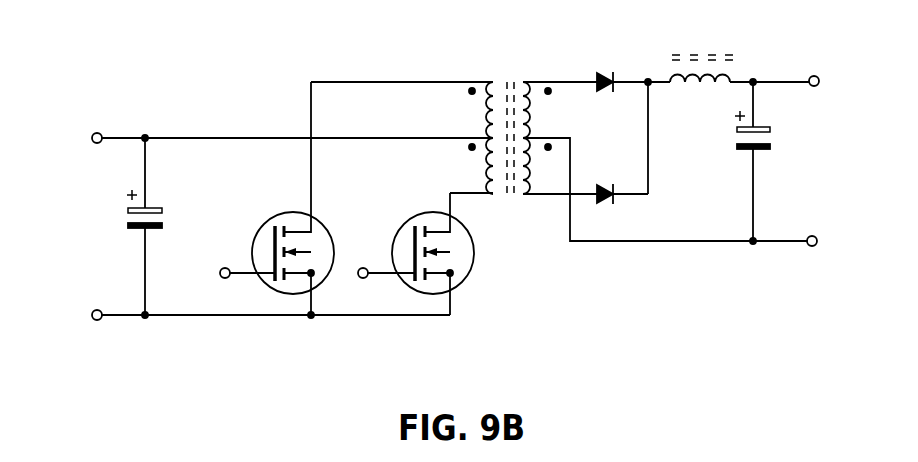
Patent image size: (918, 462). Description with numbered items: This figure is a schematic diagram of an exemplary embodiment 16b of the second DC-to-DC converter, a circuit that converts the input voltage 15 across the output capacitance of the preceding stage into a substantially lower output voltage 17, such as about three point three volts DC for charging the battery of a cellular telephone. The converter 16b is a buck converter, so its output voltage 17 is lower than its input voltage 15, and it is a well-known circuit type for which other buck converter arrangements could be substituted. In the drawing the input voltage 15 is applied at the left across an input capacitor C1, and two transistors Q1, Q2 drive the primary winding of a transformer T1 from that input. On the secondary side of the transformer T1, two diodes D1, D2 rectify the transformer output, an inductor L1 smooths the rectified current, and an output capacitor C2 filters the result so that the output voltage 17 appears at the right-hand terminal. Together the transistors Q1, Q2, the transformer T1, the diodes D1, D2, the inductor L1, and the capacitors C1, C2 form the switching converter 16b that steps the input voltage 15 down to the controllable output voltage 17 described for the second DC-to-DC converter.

The voltage 15 is at (118, 136).
The output voltage 17 is at (790, 79).
The second DC-to-DC converter embodiment 16b is at (726, 302).
The transistor Q1 is at (277, 198).
The transistor Q2 is at (416, 254).
The input capacitor C1 is at (152, 226).
The output capacitor C2 is at (759, 161).
The rectifier diode D1 is at (631, 67).
The rectifier diode D2 is at (620, 179).
The output inductor L1 is at (701, 86).
The transformer T1 is at (510, 121).